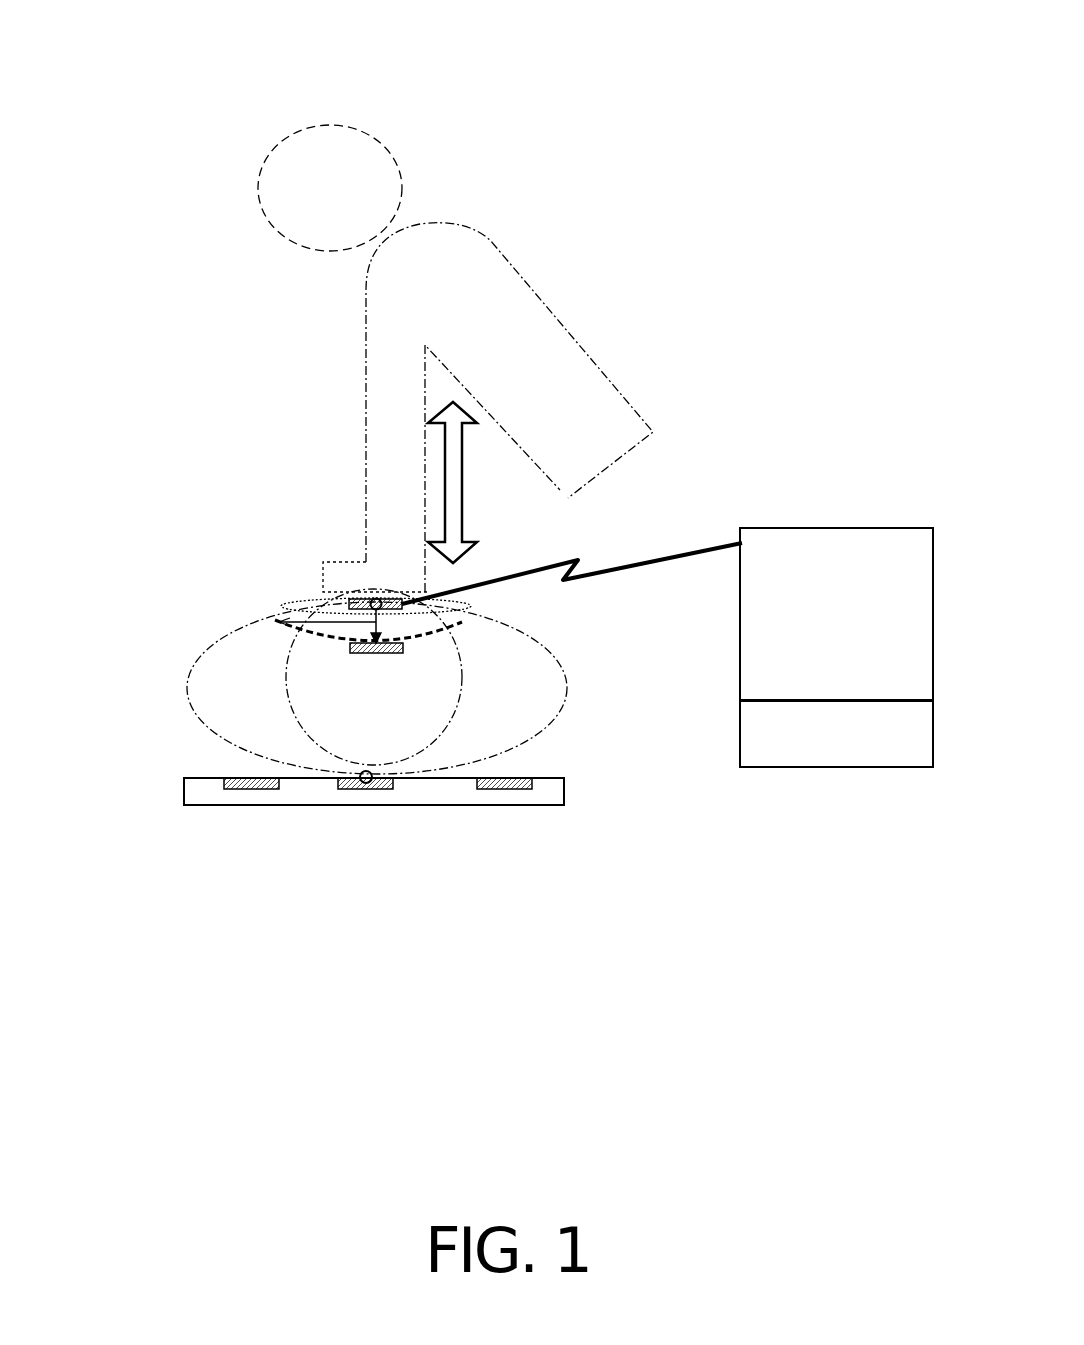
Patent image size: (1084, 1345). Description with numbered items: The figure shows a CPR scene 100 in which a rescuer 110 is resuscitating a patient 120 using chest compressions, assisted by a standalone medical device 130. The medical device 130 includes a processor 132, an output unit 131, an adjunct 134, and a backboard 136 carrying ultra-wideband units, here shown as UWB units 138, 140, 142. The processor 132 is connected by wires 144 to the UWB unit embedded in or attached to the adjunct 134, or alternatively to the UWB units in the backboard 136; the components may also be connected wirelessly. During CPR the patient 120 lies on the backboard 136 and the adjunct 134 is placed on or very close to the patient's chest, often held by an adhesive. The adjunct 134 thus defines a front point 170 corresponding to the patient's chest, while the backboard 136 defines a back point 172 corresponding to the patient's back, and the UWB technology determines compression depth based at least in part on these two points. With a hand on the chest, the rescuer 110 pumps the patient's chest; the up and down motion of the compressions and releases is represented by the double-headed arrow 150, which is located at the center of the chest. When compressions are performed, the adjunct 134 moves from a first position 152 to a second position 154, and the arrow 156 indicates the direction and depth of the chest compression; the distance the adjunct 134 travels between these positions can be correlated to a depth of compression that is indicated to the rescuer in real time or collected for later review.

The CPR scene 100 is at (786, 108).
The rescuer 110 is at (455, 358).
The patient 120 is at (187, 680).
The standalone medical device 130 is at (829, 693).
The output unit 131 is at (836, 734).
The processor 132 is at (836, 614).
The adjunct 134 is at (327, 602).
The backboard 136 is at (184, 793).
The UWB unit 138 is at (250, 792).
The UWB unit 140 is at (365, 792).
The UWB unit 142 is at (500, 792).
The wires 144 is at (637, 577).
The double-headed arrow 150 is at (452, 513).
The first position 152 is at (414, 606).
The position 154 is at (375, 655).
The arrow 156 is at (273, 621).
The front point 170 is at (375, 598).
The back point 172 is at (356, 776).